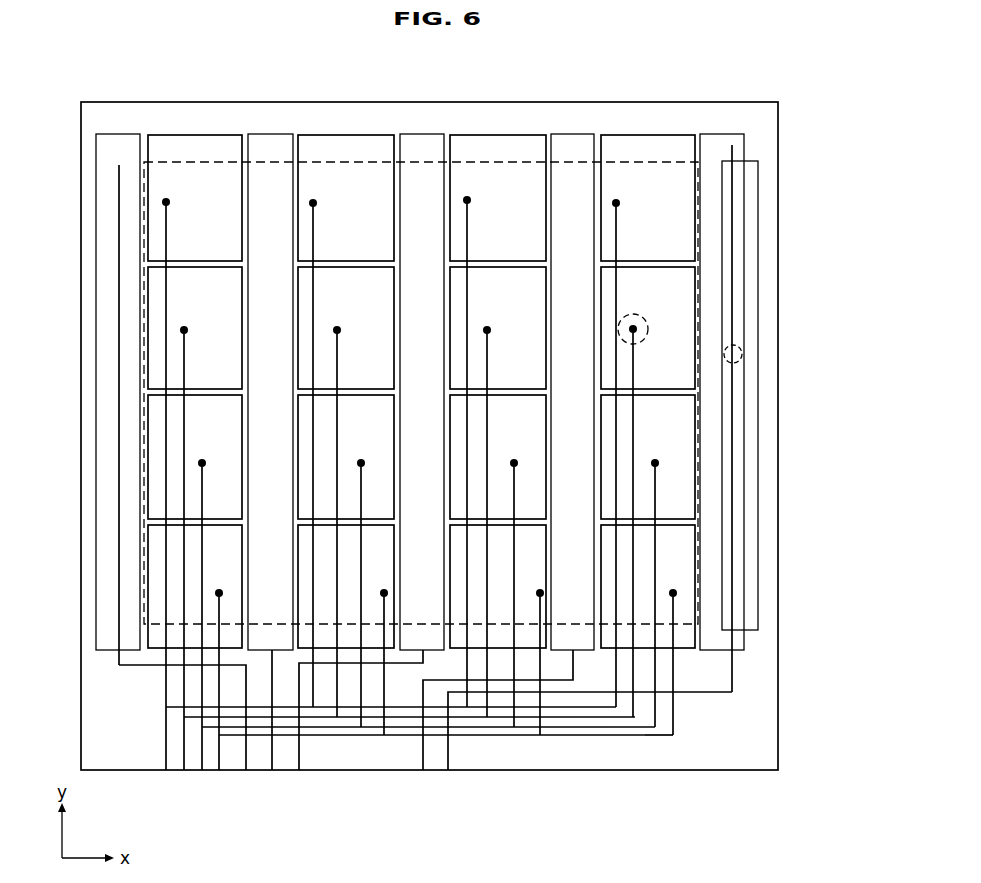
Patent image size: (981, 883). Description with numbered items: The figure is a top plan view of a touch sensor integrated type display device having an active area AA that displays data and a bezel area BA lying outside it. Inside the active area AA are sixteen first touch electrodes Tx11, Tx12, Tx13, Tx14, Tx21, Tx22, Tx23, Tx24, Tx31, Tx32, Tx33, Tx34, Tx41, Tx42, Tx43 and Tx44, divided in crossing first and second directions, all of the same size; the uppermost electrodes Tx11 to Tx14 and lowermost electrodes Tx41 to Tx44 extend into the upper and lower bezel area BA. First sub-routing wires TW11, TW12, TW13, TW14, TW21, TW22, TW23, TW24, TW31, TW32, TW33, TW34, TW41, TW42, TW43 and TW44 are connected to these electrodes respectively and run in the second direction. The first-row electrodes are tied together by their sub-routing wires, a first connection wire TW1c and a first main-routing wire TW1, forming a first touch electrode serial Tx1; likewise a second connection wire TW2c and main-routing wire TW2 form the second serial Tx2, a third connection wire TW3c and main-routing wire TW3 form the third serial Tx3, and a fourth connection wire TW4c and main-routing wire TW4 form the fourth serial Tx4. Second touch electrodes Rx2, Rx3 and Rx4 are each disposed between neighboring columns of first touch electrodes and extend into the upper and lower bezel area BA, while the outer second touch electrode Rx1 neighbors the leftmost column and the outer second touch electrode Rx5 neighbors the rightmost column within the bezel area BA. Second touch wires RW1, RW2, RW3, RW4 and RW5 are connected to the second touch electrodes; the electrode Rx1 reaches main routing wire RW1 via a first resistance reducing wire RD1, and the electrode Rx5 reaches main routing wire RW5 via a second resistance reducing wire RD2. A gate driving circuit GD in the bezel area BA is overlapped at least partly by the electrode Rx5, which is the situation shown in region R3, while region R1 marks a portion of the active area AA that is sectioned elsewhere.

The bezel area BA is at (742, 110).
The active area AA is at (630, 161).
The gate driving circuit GD is at (750, 212).
The first resistance reducing wire RD1 is at (118, 280).
The second resistance reducing wire RD2 is at (742, 250).
The region R1 is at (648, 324).
The region R3 is at (738, 350).
The 2-1 touch electrode Rx1 is at (118, 392).
The 2-2 touch electrode Rx2 is at (270, 392).
The 2-3 touch electrode Rx3 is at (422, 392).
The 2-4 touch electrode Rx4 is at (572, 392).
The 2-5 touch electrode Rx5 is at (722, 392).
The 1-1 touch electrode serial Tx1 is at (365, 198).
The 1-2 touch electrode serial Tx2 is at (365, 328).
The 1-3 touch electrode serial Tx3 is at (365, 457).
The 1-4 touch electrode serial Tx4 is at (365, 586).
The 1-1 touch electrode Tx11 is at (195, 198).
The 1-1 touch electrode Tx12 is at (346, 198).
The 1-1 touch electrode Tx13 is at (498, 198).
The 1-1 touch electrode Tx14 is at (648, 198).
The 1-2 touch electrode Tx21 is at (195, 328).
The 1-2 touch electrode Tx22 is at (346, 328).
The 1-2 touch electrode Tx23 is at (498, 328).
The 1-2 touch electrode Tx24 is at (648, 328).
The 1-3 touch electrode Tx31 is at (195, 457).
The 1-3 touch electrode Tx32 is at (346, 457).
The 1-3 touch electrode Tx33 is at (498, 457).
The 1-3 touch electrode Tx34 is at (648, 457).
The 1-4 touch electrode Tx41 is at (195, 586).
The 1-4 touch electrode Tx42 is at (346, 586).
The 1-4 touch electrode Tx43 is at (498, 586).
The 1-4 touch electrode Tx44 is at (648, 586).
The 1-1 sub-routing wire TW11 is at (169, 232).
The 1-1 sub-routing wire TW12 is at (316, 232).
The 1-1 sub-routing wire TW13 is at (470, 232).
The 1-1 sub-routing wire TW14 is at (619, 232).
The 1-2 sub-routing wire TW21 is at (187, 360).
The 1-2 sub-routing wire TW22 is at (340, 360).
The 1-2 sub-routing wire TW23 is at (490, 360).
The 1-2 sub-routing wire TW24 is at (636, 360).
The 1-3 sub-routing wire TW31 is at (204, 477).
The 1-3 sub-routing wire TW32 is at (363, 477).
The 1-3 sub-routing wire TW33 is at (516, 477).
The 1-3 sub-routing wire TW34 is at (657, 477).
The 1-4 sub-routing wire TW41 is at (221, 613).
The 1-4 sub-routing wire TW42 is at (386, 613).
The 1-4 sub-routing wire TW43 is at (542, 613).
The 1-4 sub-routing wire TW44 is at (675, 613).
The 1-1 main-routing wire TW1 is at (166, 753).
The 1-2 main-routing wire TW2 is at (184, 753).
The 1-3 main-routing wire TW3 is at (202, 753).
The 1-4 main-routing wire TW4 is at (219, 753).
The 1-1 connection wire TW1c is at (562, 707).
The 1-2 connection wire TW2c is at (598, 717).
The 1-3 connection wire TW3c is at (627, 727).
The 1-4 connection wire TW4c is at (665, 735).
The 2-1 main routing wire RW1 is at (246, 753).
The second touch wire RW2 is at (272, 753).
The second touch wire RW3 is at (299, 753).
The second touch wire RW4 is at (423, 753).
The 2-5 main routing wire RW5 is at (448, 753).